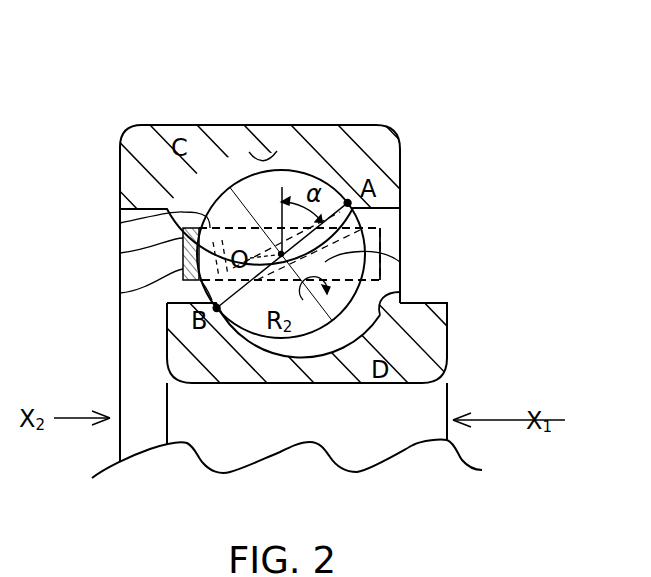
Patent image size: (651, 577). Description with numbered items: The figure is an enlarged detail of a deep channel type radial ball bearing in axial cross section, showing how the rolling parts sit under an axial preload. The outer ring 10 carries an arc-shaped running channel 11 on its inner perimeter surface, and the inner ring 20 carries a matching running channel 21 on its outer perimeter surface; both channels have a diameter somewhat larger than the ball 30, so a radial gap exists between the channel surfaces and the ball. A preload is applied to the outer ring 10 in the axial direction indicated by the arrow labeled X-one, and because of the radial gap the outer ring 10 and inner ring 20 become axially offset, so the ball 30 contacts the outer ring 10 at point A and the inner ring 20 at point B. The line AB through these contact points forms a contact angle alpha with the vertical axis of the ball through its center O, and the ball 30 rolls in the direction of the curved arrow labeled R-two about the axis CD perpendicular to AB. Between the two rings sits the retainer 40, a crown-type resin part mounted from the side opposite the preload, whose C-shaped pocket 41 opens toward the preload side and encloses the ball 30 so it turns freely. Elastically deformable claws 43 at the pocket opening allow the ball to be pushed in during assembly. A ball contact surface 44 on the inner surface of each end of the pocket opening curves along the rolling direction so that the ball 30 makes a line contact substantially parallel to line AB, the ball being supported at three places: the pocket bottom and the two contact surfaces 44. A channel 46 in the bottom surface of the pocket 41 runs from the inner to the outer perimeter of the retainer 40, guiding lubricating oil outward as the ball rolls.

The outer ring 10 is at (400, 170).
The running channel 11 is at (276, 160).
The inner ring 20 is at (167, 345).
The running channel 21 is at (400, 288).
The ball 30 is at (307, 169).
The retainer 40 is at (120, 295).
The pocket 41 is at (120, 253).
The claw 43 is at (383, 252).
The ball contact surface 44 is at (408, 263).
The channel 46 is at (120, 223).